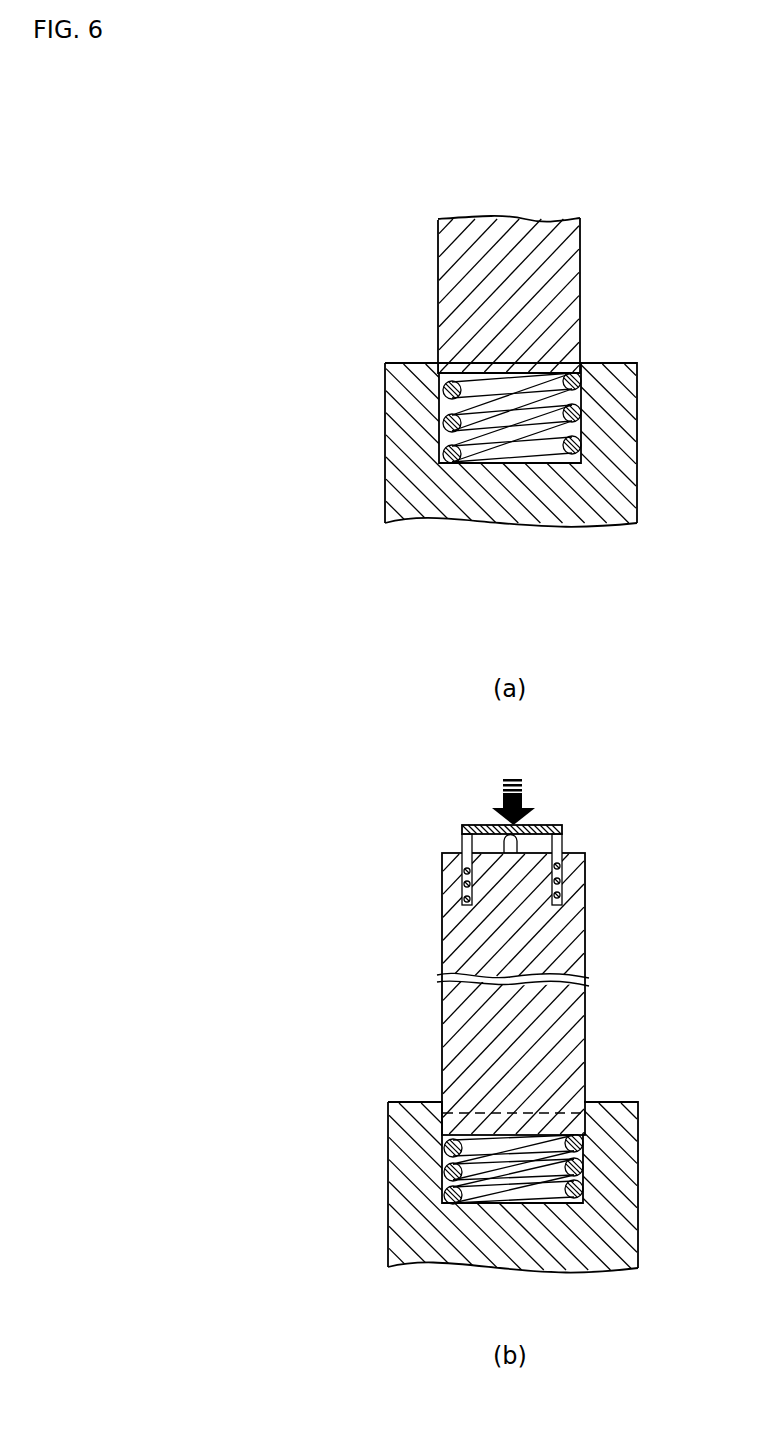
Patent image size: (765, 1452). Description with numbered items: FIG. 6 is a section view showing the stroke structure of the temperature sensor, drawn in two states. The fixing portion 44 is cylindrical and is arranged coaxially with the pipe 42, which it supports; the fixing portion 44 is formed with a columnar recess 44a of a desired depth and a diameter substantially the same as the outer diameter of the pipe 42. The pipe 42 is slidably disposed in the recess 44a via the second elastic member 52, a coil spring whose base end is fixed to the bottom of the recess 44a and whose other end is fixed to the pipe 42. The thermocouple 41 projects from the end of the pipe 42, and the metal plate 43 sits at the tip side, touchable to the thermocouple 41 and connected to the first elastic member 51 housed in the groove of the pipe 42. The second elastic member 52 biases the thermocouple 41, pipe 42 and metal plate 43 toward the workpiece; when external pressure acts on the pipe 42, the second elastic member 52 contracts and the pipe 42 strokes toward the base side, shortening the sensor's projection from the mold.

The thermocouple 41 is at (520, 848).
The pipe 42 is at (438, 272).
The metal plate 43 is at (545, 826).
The fixing portion 44 is at (385, 474).
The recess 44a is at (447, 372).
The first elastic member 51 is at (465, 878).
The second elastic member 52 is at (450, 416).